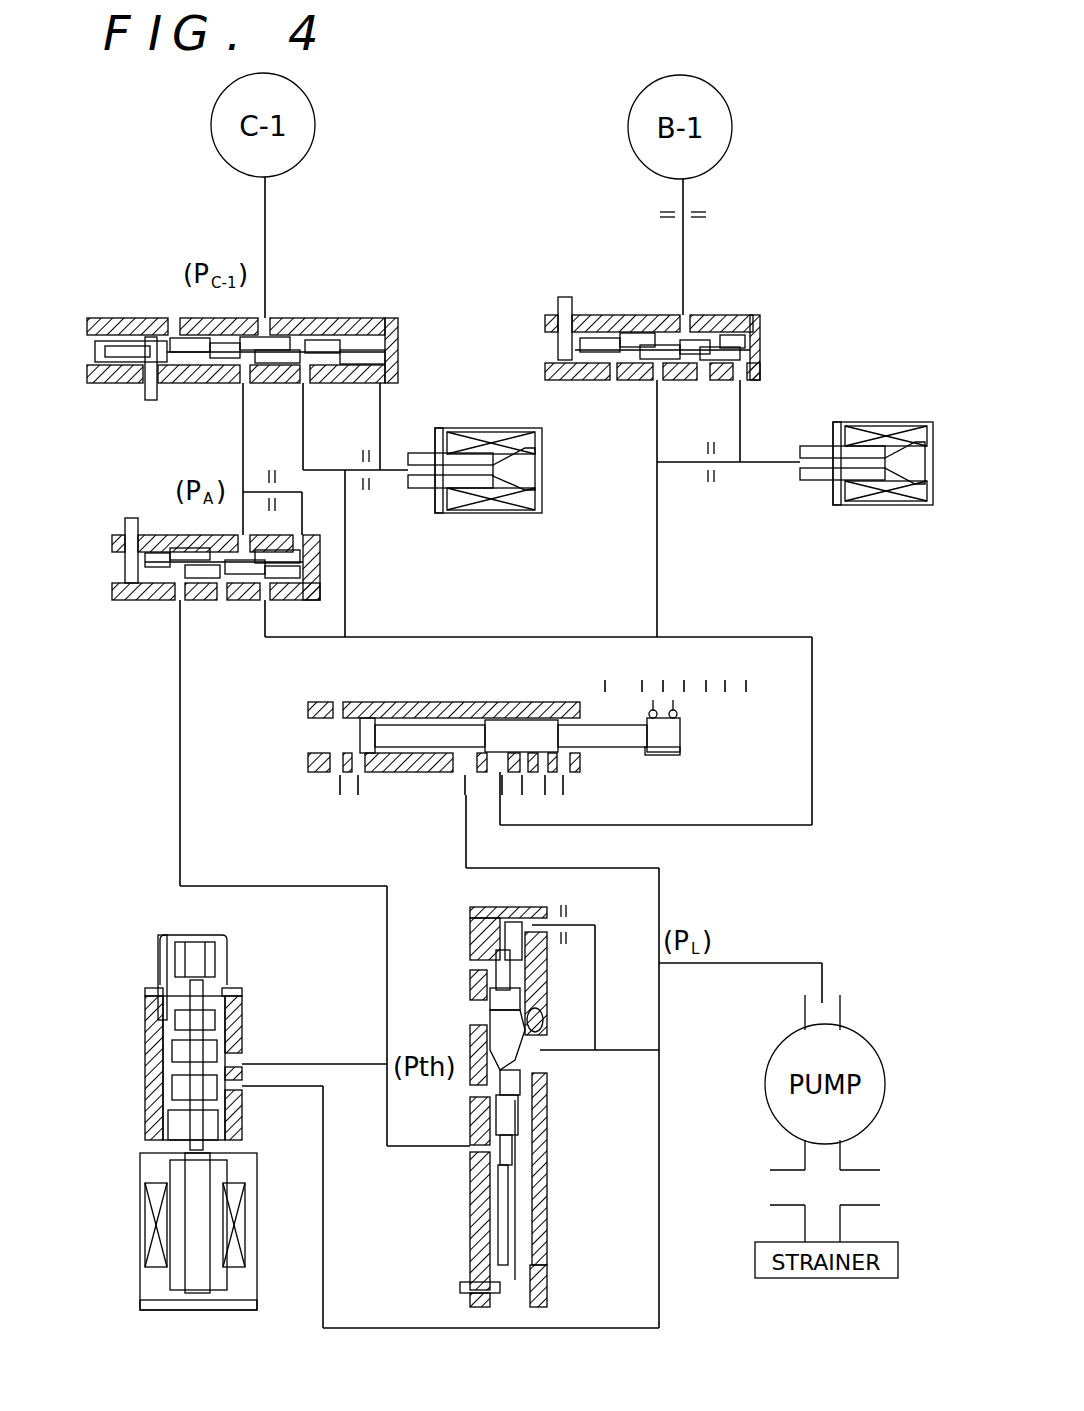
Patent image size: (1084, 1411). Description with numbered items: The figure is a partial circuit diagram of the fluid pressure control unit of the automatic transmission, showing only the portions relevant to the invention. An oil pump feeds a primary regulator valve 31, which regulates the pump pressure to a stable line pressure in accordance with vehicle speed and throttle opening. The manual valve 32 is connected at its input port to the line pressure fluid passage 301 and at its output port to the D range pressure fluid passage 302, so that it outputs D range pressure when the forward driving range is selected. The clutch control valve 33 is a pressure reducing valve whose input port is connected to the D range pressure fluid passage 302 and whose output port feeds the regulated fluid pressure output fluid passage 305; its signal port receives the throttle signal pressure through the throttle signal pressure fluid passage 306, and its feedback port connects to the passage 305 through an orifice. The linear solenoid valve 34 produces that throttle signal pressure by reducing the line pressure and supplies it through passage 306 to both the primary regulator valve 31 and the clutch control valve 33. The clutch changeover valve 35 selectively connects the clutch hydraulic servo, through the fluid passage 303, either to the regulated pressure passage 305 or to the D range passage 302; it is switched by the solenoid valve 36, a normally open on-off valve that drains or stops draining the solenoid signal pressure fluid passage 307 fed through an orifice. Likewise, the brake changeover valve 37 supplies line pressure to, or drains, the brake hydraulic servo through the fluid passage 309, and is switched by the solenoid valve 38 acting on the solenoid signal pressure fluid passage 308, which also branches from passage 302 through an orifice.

The primary regulator valve 31 is at (560, 1214).
The manual valve 32 is at (295, 750).
The C-1 control valve 33 is at (109, 530).
The linear solenoid valve 34 is at (262, 968).
The C-1 changeover valve 35 is at (408, 316).
The solenoid valve 36 is at (477, 421).
The B-1 changeover valve 37 is at (732, 314).
The solenoid valve 38 is at (856, 417).
The line pressure fluid passage 301 is at (660, 1026).
The D range pressure fluid passage 302 is at (505, 636).
The fluid passage 303 is at (266, 236).
The regulated fluid pressure output fluid passage 305 is at (242, 416).
The throttle signal pressure fluid passage 306 is at (360, 885).
The solenoid signal pressure fluid passage 307 is at (381, 410).
The solenoid signal pressure fluid passage 308 is at (741, 410).
The fluid passage 309 is at (683, 290).